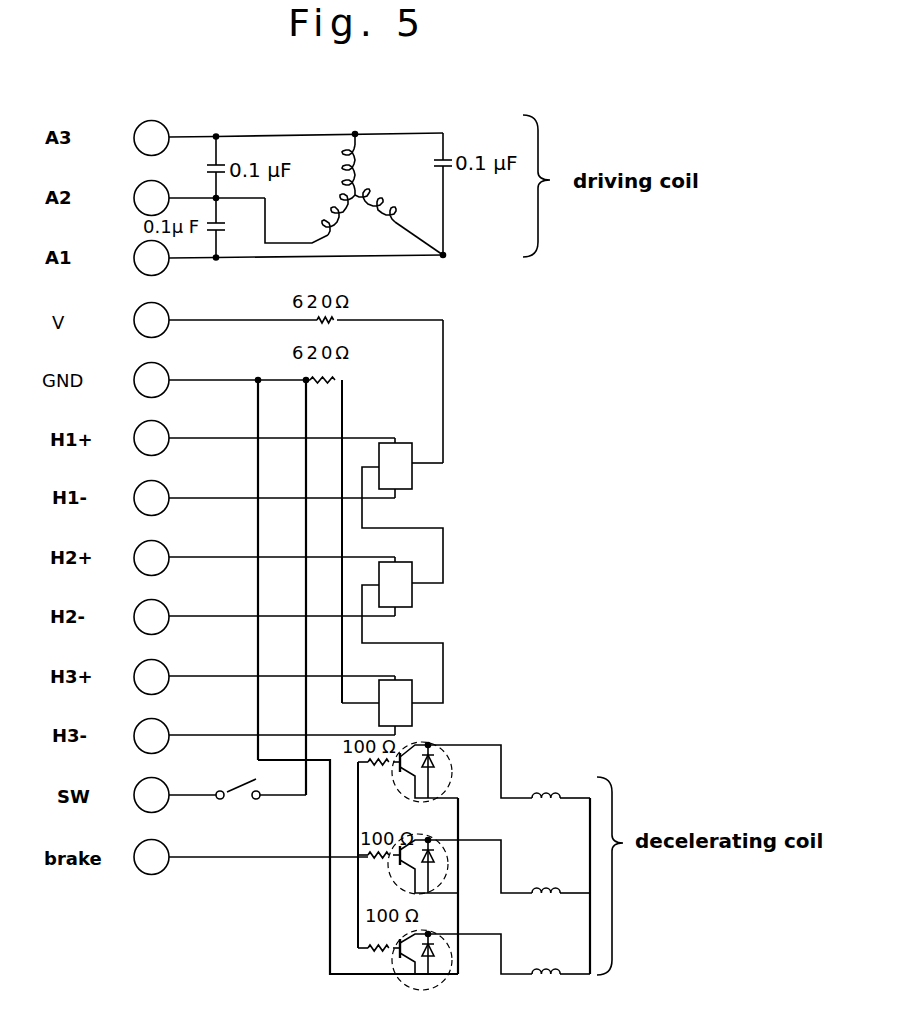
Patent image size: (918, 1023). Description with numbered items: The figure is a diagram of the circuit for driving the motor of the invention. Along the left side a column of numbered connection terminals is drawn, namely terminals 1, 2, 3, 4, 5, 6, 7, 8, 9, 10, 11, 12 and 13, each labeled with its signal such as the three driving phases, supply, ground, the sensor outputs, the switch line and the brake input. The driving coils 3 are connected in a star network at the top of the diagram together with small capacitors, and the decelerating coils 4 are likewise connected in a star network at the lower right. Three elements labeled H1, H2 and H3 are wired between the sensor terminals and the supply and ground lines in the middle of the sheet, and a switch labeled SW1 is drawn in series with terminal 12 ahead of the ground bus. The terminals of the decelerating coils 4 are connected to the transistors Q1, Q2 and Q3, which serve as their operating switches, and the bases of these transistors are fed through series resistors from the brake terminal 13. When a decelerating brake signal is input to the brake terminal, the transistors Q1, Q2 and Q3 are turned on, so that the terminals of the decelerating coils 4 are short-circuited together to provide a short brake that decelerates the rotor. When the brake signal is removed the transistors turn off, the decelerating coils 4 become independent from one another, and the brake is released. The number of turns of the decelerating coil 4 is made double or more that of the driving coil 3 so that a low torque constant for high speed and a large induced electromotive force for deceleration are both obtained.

The terminal 1 (A3) 1 is at (175, 138).
The terminal 2 (A2) 2 is at (199, 198).
The driving coil 3 is at (175, 258).
The decelerating coil 4 is at (225, 320).
The terminal 5 (GND) 5 is at (196, 380).
The terminal 6 (H1+) 6 is at (264, 438).
The terminal 7 (H1-) 7 is at (264, 498).
The terminal 8 (H2+) 8 is at (264, 558).
The terminal 9 (H2-) 9 is at (264, 617).
The terminal 10 (H3+) 10 is at (264, 677).
The terminal 11 (H3-) 11 is at (264, 736).
The terminal 12 (SW) 12 is at (175, 795).
The terminal 13 (brake) 13 is at (251, 857).
The hall sensor H1 is at (402, 510).
The hall sensor H2 is at (402, 630).
The hall sensor H3 is at (377, 705).
The transistor Q1 is at (479, 772).
The transistor Q2 is at (479, 864).
The transistor Q3 is at (479, 960).
The switch SW1 is at (261, 808).